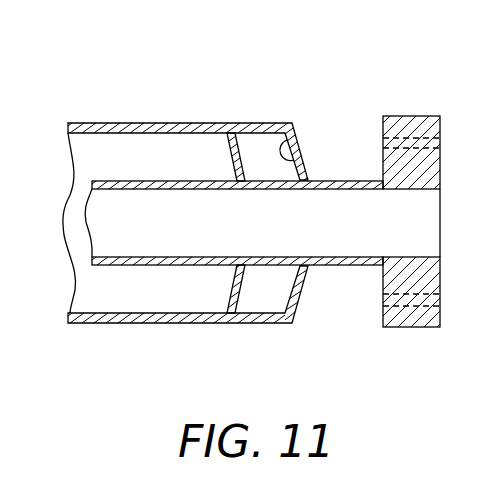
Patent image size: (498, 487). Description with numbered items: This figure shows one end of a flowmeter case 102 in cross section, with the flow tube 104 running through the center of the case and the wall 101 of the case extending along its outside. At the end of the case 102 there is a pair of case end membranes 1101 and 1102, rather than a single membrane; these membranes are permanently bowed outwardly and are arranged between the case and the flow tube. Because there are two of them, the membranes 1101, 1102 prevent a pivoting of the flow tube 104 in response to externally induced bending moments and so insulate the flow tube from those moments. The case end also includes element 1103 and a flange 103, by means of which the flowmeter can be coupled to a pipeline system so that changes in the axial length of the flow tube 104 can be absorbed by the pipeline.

The outer tube 101 is at (152, 123).
The flowmeter case 102 is at (116, 121).
The flange 103 is at (417, 120).
The flow tube 104 is at (242, 240).
The case end membrane 1101 is at (298, 123).
The case end membrane 1102 is at (220, 157).
The element 1103 is at (323, 180).